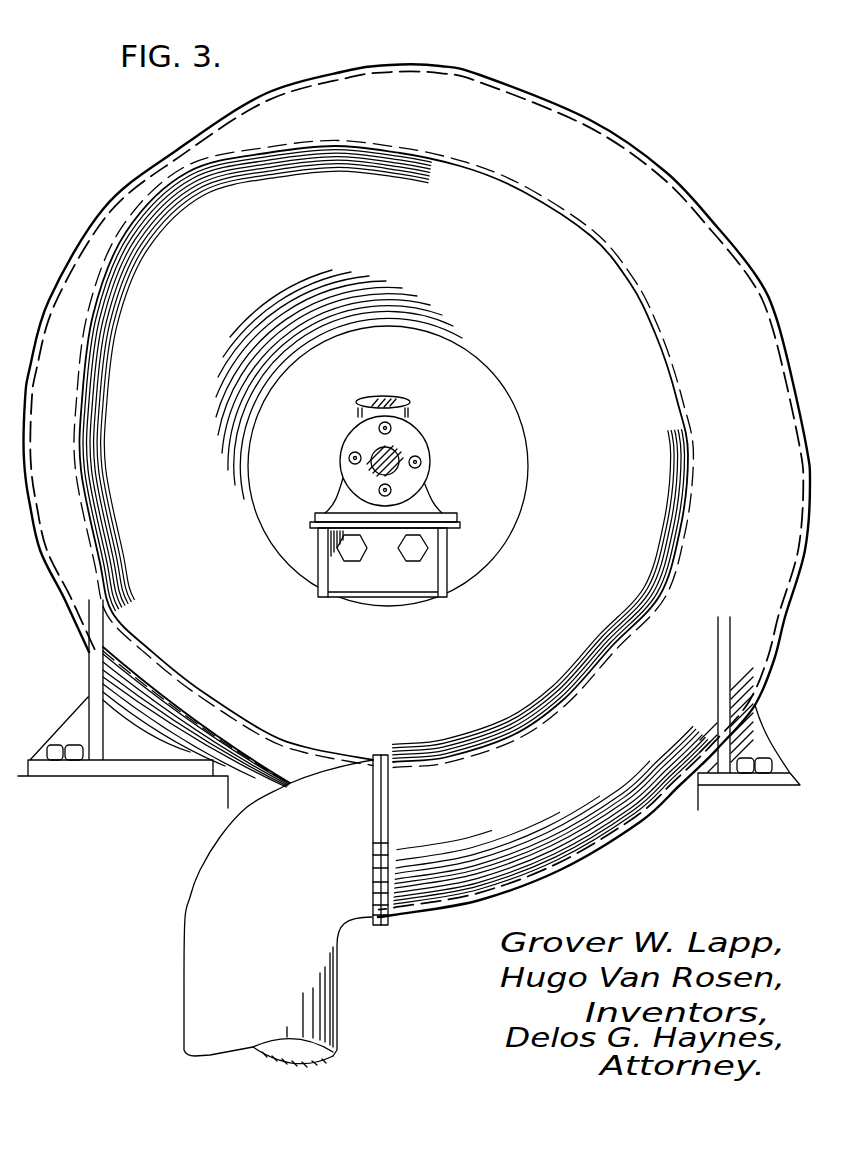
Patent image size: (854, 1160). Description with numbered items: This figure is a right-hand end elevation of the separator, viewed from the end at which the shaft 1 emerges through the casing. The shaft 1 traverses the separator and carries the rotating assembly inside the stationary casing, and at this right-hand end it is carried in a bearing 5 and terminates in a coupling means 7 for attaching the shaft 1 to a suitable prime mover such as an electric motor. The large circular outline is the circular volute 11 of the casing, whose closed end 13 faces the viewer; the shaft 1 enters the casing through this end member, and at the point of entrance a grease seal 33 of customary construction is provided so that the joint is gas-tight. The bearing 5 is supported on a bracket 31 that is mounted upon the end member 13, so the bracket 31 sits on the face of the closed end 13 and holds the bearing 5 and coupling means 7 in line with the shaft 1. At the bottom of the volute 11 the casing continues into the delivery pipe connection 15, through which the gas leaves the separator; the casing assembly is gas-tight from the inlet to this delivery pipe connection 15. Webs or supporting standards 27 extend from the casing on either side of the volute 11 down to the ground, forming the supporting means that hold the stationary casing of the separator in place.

The shaft 1 is at (383, 457).
The bearing 5 is at (348, 498).
The coupling means 7 is at (415, 432).
The circular volute 11 is at (125, 227).
The closed end 13 is at (311, 768).
The delivery pipe connection 15 is at (333, 922).
The supporting standards 27 is at (97, 702).
The bracket 31 is at (447, 538).
The grease seal 33 is at (390, 396).